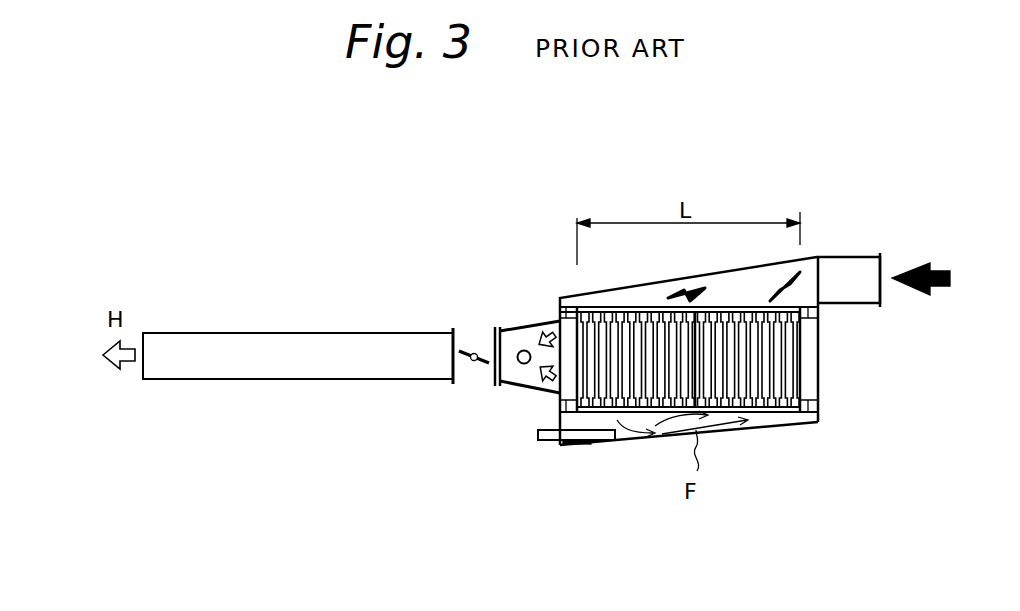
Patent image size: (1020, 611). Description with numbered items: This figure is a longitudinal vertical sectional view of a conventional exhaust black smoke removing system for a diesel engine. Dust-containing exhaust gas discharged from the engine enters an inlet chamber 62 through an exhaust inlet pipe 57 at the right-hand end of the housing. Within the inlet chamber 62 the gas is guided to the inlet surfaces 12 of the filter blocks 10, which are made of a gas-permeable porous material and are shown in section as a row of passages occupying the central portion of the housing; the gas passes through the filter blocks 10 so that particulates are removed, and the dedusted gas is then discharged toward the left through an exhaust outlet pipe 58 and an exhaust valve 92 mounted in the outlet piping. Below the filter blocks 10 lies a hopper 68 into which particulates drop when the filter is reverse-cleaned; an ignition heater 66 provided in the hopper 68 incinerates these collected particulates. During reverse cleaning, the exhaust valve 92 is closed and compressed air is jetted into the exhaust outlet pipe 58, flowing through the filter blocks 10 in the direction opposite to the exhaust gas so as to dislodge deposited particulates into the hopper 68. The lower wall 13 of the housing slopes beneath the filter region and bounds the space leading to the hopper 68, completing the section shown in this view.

The filter block 10 is at (795, 355).
The inlet surface 12 is at (617, 306).
The lower housing wall 13 is at (790, 425).
The exhaust inlet pipe 57 is at (840, 255).
The exhaust outlet pipe 58 is at (537, 331).
The inlet chamber 62 is at (757, 287).
The ignition heater 66 is at (546, 440).
The hopper 68 is at (582, 423).
The exhaust valve 92 is at (470, 384).